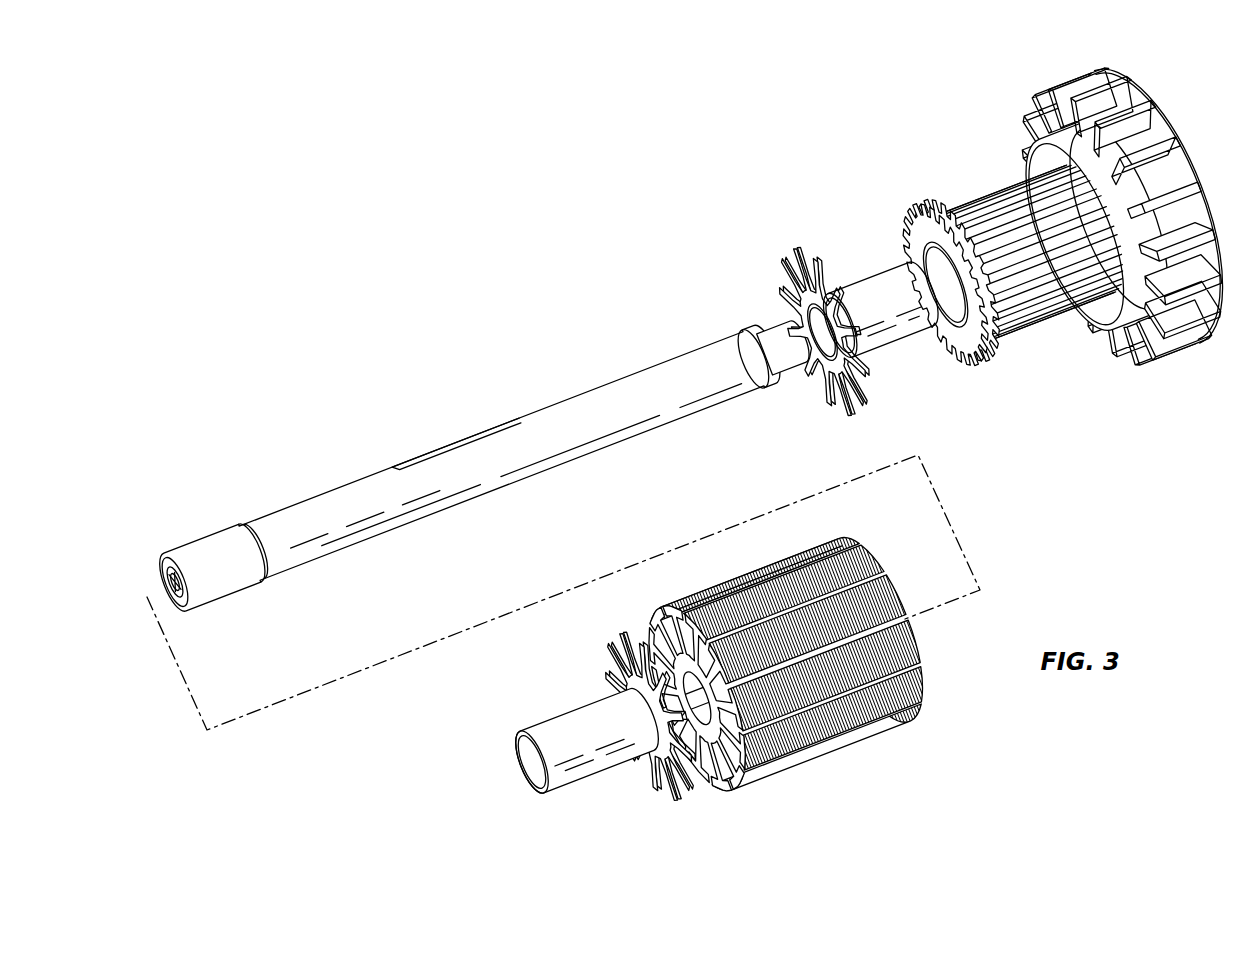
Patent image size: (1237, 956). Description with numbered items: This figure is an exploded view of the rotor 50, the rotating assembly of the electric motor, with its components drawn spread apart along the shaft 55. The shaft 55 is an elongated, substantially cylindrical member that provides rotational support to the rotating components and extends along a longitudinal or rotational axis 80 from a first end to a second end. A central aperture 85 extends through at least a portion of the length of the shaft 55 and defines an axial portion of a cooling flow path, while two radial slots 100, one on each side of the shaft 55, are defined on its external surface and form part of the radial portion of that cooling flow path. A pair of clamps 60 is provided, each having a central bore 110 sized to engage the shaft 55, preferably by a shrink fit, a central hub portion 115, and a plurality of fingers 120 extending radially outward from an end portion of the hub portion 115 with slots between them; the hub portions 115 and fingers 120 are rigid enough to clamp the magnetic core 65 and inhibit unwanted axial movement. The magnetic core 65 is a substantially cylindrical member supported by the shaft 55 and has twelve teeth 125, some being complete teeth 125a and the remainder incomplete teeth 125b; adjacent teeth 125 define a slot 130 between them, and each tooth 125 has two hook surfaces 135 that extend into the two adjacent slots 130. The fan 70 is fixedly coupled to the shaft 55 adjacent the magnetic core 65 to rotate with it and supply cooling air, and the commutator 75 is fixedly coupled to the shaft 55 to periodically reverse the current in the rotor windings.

The rotor 50 is at (512, 172).
The shaft 55 is at (661, 388).
The clamp 60 is at (831, 236).
The magnetic core 65 is at (818, 782).
The fan 70 is at (1128, 92).
The commutator 75 is at (976, 206).
The longitudinal or rotational axis 80 is at (797, 334).
The central aperture 85 is at (165, 593).
The radial slot 100 is at (446, 446).
The central bore 110 is at (800, 376).
The central hub portion 115 is at (890, 326).
The fingers 120 is at (793, 258).
The teeth 125 is at (926, 691).
The complete teeth 125a is at (931, 650).
The incomplete teeth 125b is at (741, 577).
The slot 130 is at (718, 781).
The hook surface 135 is at (661, 613).